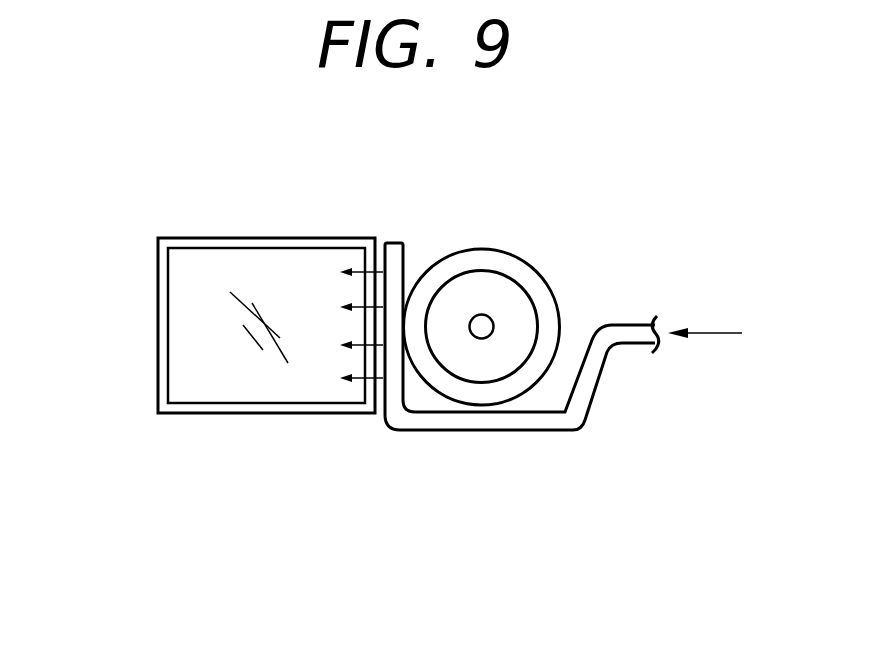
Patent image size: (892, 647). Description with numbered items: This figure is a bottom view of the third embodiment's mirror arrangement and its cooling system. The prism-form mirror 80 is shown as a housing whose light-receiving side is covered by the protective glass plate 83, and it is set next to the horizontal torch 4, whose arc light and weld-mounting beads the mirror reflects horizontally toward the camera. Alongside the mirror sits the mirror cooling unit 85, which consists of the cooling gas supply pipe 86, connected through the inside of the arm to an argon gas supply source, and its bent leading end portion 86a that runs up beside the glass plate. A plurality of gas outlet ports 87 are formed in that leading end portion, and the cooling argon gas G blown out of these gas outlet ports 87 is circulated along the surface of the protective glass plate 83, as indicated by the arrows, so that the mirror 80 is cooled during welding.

The horizontal torch 4 is at (542, 278).
The prism-form mirror 80 is at (241, 420).
The protective glass plate 83 is at (172, 313).
The mirror cooling unit 85 is at (436, 436).
The cooling gas supply pipe 86 is at (638, 323).
The leading end portion 86a is at (403, 262).
The gas outlet ports 87 is at (383, 272).